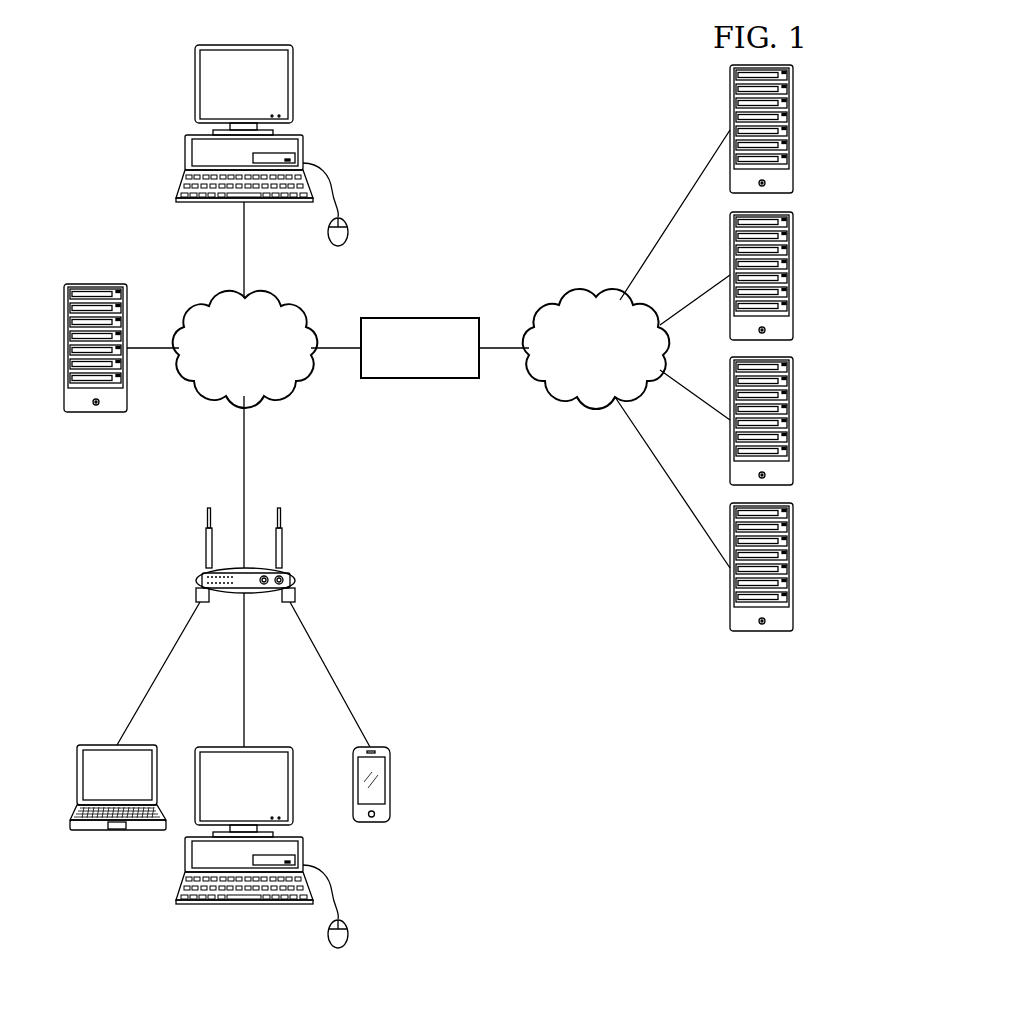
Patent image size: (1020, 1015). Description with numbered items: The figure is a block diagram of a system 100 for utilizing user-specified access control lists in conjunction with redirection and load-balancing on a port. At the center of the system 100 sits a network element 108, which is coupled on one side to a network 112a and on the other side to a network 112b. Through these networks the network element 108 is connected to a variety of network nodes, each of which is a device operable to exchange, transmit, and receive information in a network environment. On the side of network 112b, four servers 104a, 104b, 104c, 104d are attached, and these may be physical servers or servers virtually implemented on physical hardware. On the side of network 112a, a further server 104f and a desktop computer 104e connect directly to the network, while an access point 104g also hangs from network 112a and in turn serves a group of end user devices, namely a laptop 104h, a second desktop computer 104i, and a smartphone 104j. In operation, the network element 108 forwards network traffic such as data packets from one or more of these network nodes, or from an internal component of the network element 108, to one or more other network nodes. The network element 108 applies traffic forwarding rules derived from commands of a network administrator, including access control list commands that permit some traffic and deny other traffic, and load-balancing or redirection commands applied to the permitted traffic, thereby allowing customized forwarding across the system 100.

The system 100 is at (600, 733).
The server 104a is at (793, 108).
The server 104b is at (793, 255).
The server 104c is at (793, 440).
The server 104d is at (793, 586).
The desktop computer 104e is at (195, 82).
The server 104f is at (95, 285).
The access point 104g is at (206, 558).
The laptop 104h is at (98, 830).
The desktop computer 104i is at (222, 903).
The smartphone 104j is at (390, 782).
The network element 108 is at (420, 318).
The network 112a is at (185, 300).
The network 112b is at (596, 297).